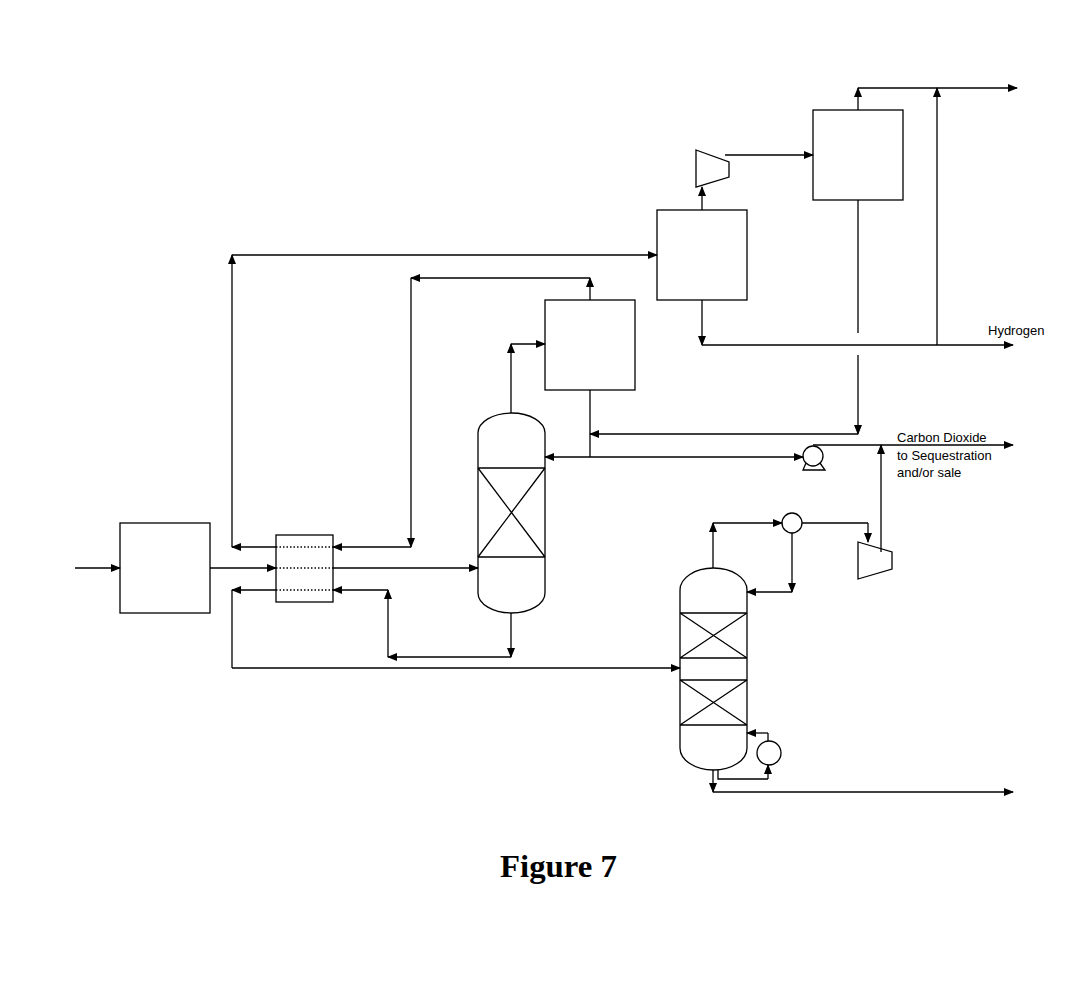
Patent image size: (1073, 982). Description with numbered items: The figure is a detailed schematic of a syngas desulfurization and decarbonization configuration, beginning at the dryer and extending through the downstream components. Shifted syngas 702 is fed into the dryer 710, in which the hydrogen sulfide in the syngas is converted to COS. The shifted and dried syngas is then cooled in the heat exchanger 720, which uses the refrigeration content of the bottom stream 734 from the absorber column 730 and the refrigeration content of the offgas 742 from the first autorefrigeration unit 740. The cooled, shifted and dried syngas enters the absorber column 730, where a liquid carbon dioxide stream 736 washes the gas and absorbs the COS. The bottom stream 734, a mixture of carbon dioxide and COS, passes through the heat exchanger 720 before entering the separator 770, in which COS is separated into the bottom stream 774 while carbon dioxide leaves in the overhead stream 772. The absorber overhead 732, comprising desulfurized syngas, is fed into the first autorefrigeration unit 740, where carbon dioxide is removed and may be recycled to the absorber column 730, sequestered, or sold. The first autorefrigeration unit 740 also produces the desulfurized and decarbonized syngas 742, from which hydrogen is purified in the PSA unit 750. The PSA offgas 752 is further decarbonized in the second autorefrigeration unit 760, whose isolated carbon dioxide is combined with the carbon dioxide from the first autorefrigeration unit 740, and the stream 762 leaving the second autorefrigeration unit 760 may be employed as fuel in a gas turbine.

The shifted syngas 702 is at (106, 565).
The dryer 710 is at (152, 613).
The heat exchanger 720 is at (287, 536).
The absorber column 730 is at (545, 570).
The absorber overhead 732 is at (508, 393).
The bottom stream 734 is at (511, 640).
The liquid carbon dioxide stream 736 is at (555, 458).
The first autorefrigeration unit 740 is at (635, 330).
The offgas 742 is at (507, 278).
The PSA unit 750 is at (747, 228).
The PSA offgas 752 is at (762, 153).
The second autorefrigeration unit 760 is at (838, 110).
The stream leaving the second autorefrigeration unit 762 is at (878, 88).
The separator 770 is at (747, 668).
The overhead stream 772 is at (745, 522).
The bottom stream 774 is at (830, 793).